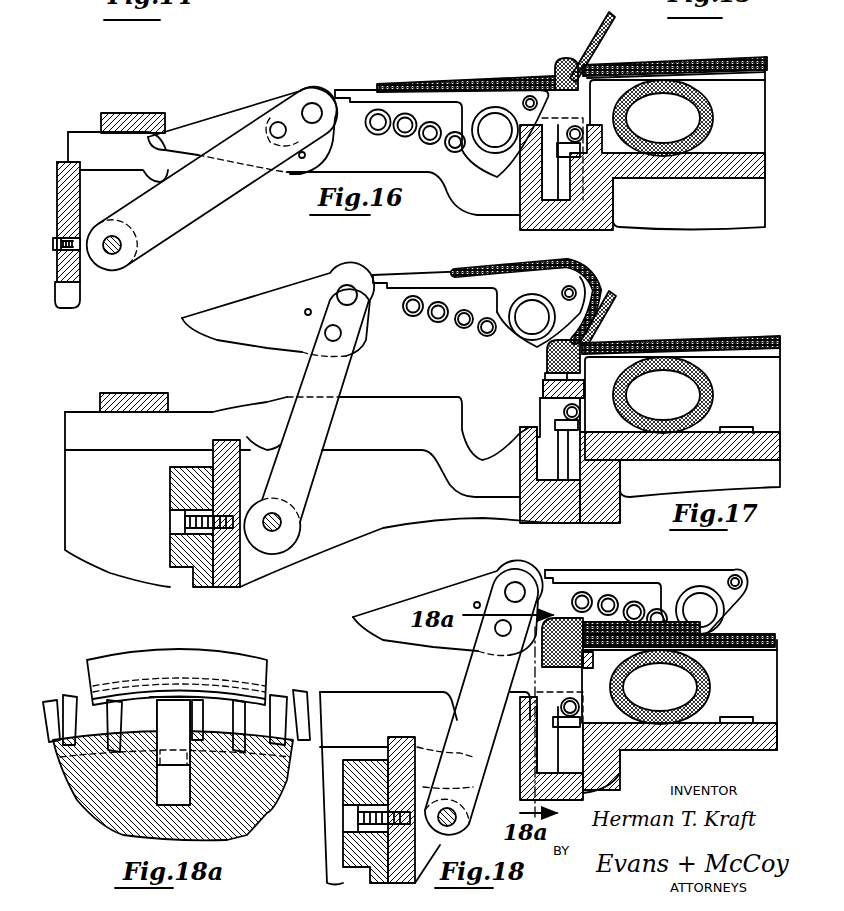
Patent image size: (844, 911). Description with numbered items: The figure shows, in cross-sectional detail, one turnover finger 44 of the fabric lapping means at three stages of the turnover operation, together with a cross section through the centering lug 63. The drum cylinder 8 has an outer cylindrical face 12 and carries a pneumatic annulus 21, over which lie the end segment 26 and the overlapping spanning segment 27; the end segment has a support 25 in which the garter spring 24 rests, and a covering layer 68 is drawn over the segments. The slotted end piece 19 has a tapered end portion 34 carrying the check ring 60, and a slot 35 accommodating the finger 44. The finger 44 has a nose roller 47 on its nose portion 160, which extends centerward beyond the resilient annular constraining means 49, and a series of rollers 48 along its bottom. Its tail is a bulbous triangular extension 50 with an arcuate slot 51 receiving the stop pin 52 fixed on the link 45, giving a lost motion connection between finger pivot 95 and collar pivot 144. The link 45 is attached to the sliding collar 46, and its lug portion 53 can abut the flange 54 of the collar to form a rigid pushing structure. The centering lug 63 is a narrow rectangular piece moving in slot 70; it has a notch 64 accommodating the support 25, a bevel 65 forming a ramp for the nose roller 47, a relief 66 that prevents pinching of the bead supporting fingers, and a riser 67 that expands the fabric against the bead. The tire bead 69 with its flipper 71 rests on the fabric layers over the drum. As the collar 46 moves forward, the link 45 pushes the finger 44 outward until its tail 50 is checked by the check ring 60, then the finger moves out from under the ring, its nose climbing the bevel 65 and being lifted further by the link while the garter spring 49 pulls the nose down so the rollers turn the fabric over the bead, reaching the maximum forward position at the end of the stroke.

In FIG. 16, the drum cylinder 8 is at (632, 180).
In FIG. 17, the drum cylinder 8 is at (632, 461).
In FIG. 18, the drum cylinder 8 is at (621, 770).
In FIG. 17, the outer cylindrical face 12 is at (738, 430).
In FIG. 18, the outer cylindrical face 12 is at (738, 721).
In FIG. 16, the end piece 19 is at (66, 142).
In FIG. 17, the end piece 19 is at (415, 397).
In FIG. 18, the end piece 19 is at (378, 690).
In FIG. 18A, the end piece 19 is at (105, 820).
In FIG. 16, the pneumatic annulus 21 is at (715, 126).
In FIG. 17, the pneumatic annulus 21 is at (713, 394).
In FIG. 18, the pneumatic annulus 21 is at (708, 687).
In FIG. 16, the garter spring 24 is at (575, 125).
In FIG. 17, the garter spring 24 is at (572, 404).
In FIG. 18, the garter spring 24 is at (566, 699).
In FIG. 18A, the garter spring 24 is at (97, 792).
In FIG. 17, the support 25 is at (572, 431).
In FIG. 18, the support 25 is at (567, 756).
In FIG. 18A, the support 25 is at (195, 776).
In FIG. 16, the end segment 26 is at (765, 80).
In FIG. 17, the end segment 26 is at (682, 394).
In FIG. 18, the end segment 26 is at (679, 686).
In FIG. 18A, the end segment 26 is at (73, 690).
In FIG. 16, the spanning segment 27 is at (770, 75).
In FIG. 17, the tapered end portion 34 is at (183, 411).
In FIG. 17, the slot 35 is at (358, 431).
In FIG. 18, the slot 35 is at (343, 732).
In FIG. 16, the turnover finger 44 is at (362, 90).
In FIG. 17, the turnover finger 44 is at (450, 273).
In FIG. 18, the turnover finger 44 is at (595, 570).
In FIG. 16, the link 45 is at (203, 208).
In FIG. 17, the link 45 is at (310, 477).
In FIG. 18, the link 45 is at (457, 678).
In FIG. 17, the sliding collar 46 is at (170, 561).
In FIG. 18, the sliding collar 46 is at (341, 884).
In FIG. 16, the nose roller 47 is at (513, 100).
In FIG. 17, the nose roller 47 is at (568, 277).
In FIG. 18, the nose roller 47 is at (752, 578).
In FIG. 16, the rollers 48 is at (415, 137).
In FIG. 17, the rollers 48 is at (490, 328).
In FIG. 18, the rollers 48 is at (636, 602).
In FIG. 16, the resilient annular constraining means 49 is at (493, 157).
In FIG. 17, the resilient annular constraining means 49 is at (523, 340).
In FIG. 18, the resilient annular constraining means 49 is at (722, 627).
In FIG. 16, the bulbous triangular extension 50 is at (207, 117).
In FIG. 17, the bulbous triangular extension 50 is at (222, 297).
In FIG. 18, the bulbous triangular extension 50 is at (407, 591).
In FIG. 16, the arcuate slot 51 is at (303, 160).
In FIG. 17, the arcuate slot 51 is at (305, 312).
In FIG. 18, the arcuate slot 51 is at (480, 600).
In FIG. 16, the stop pin 52 is at (277, 122).
In FIG. 17, the stop pin 52 is at (338, 340).
In FIG. 18, the stop pin 52 is at (505, 637).
In FIG. 17, the lug portion 53 is at (255, 449).
In FIG. 16, the flange 54 is at (78, 163).
In FIG. 17, the flange 54 is at (227, 440).
In FIG. 18, the flange 54 is at (405, 737).
In FIG. 16, the check ring 60 is at (127, 111).
In FIG. 17, the check ring 60 is at (118, 400).
In FIG. 17, the centering lug 63 is at (540, 393).
In FIG. 18, the centering lug 63 is at (540, 692).
In FIG. 18A, the centering lug 63 is at (178, 707).
In FIG. 16, the notch 64 is at (570, 160).
In FIG. 17, the notch 64 is at (556, 425).
In FIG. 18, the notch 64 is at (553, 723).
In FIG. 17, the bevel 65 is at (541, 383).
In FIG. 17, the relief 66 is at (541, 374).
In FIG. 18A, the relief 66 is at (170, 693).
In FIG. 18, the riser 67 is at (591, 657).
In FIG. 16, the cover strip 68 is at (767, 63).
In FIG. 17, the cover strip 68 is at (750, 340).
In FIG. 18, the cover strip 68 is at (776, 636).
In FIG. 16, the tire bead 69 is at (567, 60).
In FIG. 17, the tire bead 69 is at (563, 356).
In FIG. 18, the tire bead 69 is at (621, 642).
In FIG. 18A, the tire bead 69 is at (87, 675).
In FIG. 18A, the slot 70 is at (183, 795).
In FIG. 16, the flipper 71 is at (627, 13).
In FIG. 17, the flipper 71 is at (614, 297).
In FIG. 16, the finger pivot 95 is at (313, 108).
In FIG. 17, the finger pivot 95 is at (352, 289).
In FIG. 18, the finger pivot 95 is at (518, 582).
In FIG. 17, the collar pivot 144 is at (280, 535).
In FIG. 18, the collar pivot 144 is at (452, 826).
In FIG. 16, the nose portion 160 is at (520, 100).
In FIG. 17, the nose portion 160 is at (569, 293).
In FIG. 18, the nose portion 160 is at (728, 576).